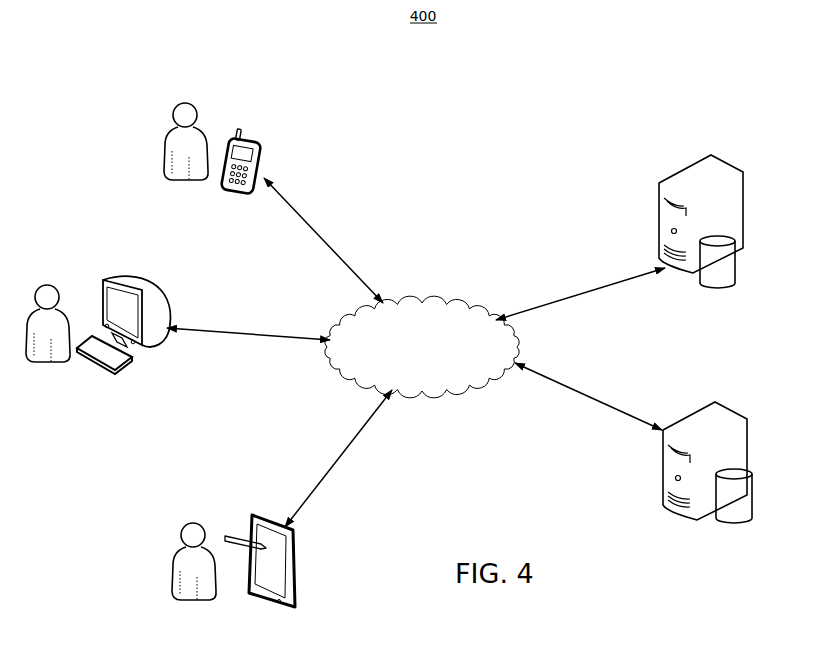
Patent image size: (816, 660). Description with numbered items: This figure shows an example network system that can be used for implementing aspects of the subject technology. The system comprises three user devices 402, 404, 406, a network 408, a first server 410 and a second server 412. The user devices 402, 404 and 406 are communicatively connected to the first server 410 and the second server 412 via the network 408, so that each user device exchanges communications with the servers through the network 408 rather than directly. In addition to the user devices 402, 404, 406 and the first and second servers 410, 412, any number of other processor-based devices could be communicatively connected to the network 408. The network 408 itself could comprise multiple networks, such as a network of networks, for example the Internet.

The user device 402 is at (255, 140).
The user device 404 is at (148, 285).
The user device 406 is at (260, 515).
The network 408 is at (420, 303).
The first server 410 is at (723, 157).
The second server 412 is at (745, 415).